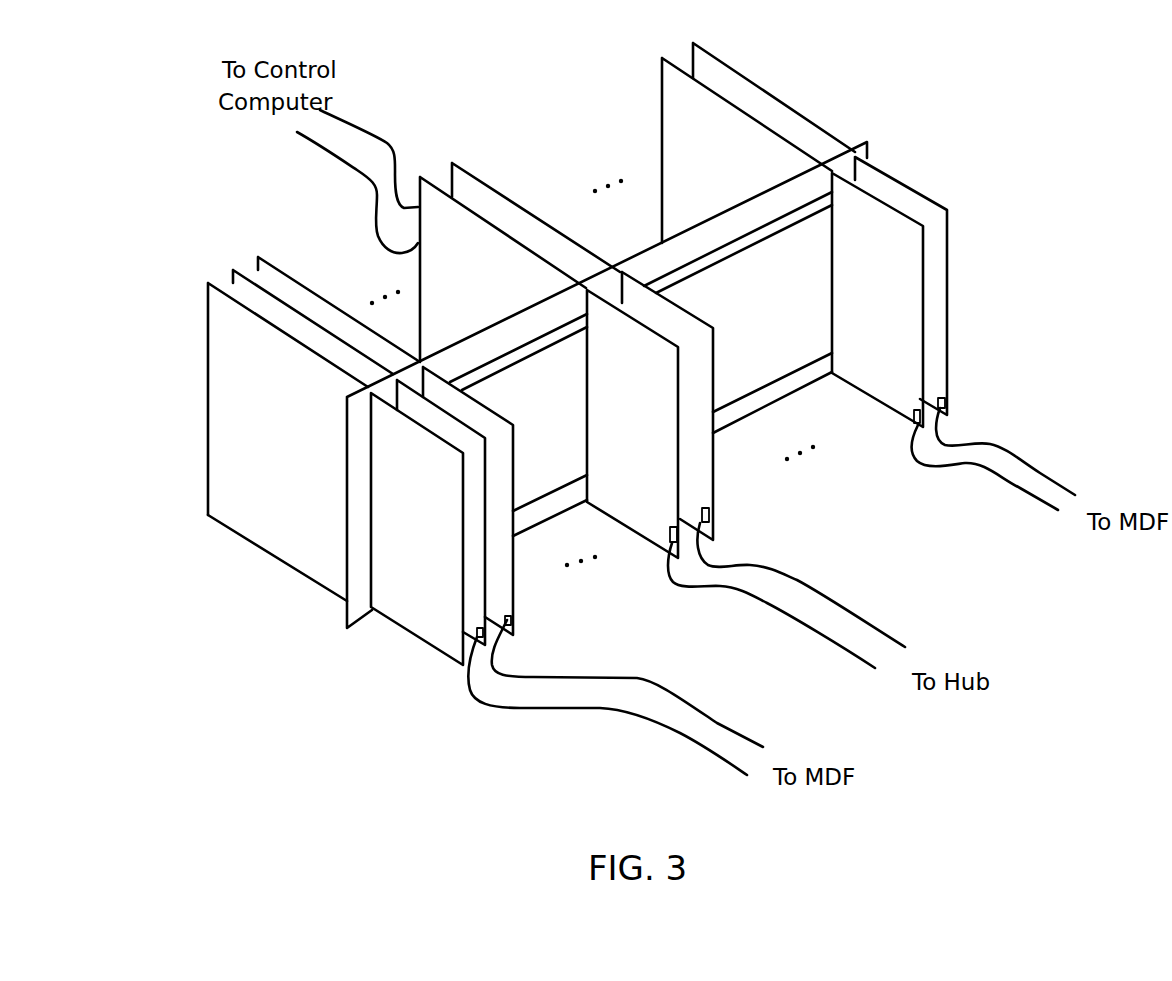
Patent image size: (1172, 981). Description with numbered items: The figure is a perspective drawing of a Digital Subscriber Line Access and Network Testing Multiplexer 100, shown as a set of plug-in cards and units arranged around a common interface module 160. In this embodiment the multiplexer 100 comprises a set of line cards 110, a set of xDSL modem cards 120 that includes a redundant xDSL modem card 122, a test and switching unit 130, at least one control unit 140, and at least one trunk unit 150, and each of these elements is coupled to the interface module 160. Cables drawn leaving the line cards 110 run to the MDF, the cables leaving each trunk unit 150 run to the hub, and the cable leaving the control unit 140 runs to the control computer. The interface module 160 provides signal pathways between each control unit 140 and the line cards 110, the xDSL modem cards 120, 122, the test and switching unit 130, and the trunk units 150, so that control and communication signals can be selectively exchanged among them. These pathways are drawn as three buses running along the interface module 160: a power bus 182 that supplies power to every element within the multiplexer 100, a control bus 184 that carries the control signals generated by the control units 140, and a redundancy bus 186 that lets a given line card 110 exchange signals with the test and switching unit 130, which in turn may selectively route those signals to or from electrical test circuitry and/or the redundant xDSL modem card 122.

The Digital Subscriber Line Access and Network Testing Multiplexer 100 is at (222, 731).
The line card 110 is at (510, 463).
The xDSL modem card 120 is at (668, 66).
The redundant xDSL modem card 122 is at (250, 522).
The test and switching unit 130 is at (443, 632).
The control unit 140 is at (426, 178).
The trunk unit 150 is at (687, 323).
The interface module 160 is at (352, 613).
The power bus 182 is at (523, 343).
The control bus 184 is at (510, 368).
The redundancy bus 186 is at (797, 367).